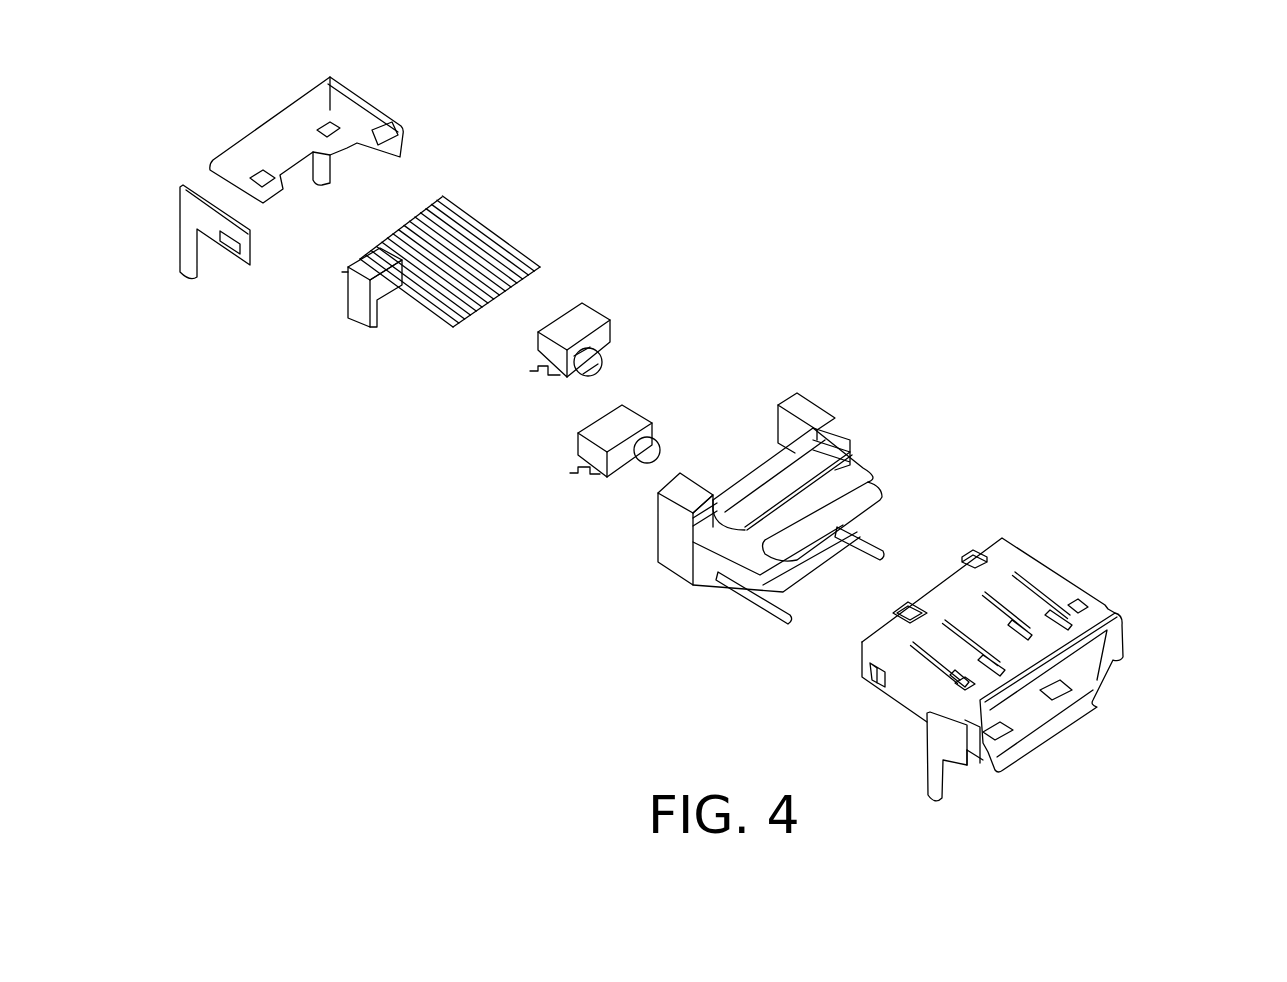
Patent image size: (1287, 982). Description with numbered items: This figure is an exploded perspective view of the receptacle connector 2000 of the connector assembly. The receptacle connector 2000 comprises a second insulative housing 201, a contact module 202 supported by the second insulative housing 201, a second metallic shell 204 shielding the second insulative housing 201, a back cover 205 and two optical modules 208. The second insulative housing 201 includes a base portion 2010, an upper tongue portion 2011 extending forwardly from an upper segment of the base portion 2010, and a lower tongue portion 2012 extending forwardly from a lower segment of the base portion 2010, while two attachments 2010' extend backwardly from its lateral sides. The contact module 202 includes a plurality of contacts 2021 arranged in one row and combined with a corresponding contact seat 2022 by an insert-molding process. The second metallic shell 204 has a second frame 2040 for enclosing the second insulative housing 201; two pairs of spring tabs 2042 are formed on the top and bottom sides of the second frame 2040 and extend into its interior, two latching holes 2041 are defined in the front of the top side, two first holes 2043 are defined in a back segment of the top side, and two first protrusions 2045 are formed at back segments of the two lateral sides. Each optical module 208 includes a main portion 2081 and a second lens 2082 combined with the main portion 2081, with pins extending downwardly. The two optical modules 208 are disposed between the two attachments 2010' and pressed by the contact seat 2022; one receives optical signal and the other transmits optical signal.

The receptacle connector 2000 is at (1255, 577).
The back cover 205 is at (383, 96).
The contact module 202 is at (497, 212).
The contacts 2021 is at (520, 246).
The contact seat 2022 is at (358, 297).
The optical modules 208 is at (513, 350).
The main portion 2081 is at (587, 313).
The second lens 2082 is at (600, 368).
The second insulative housing 201 is at (850, 405).
The base portion 2010 is at (791, 466).
The attachments 2010' is at (845, 401).
The upper tongue portion 2011 is at (880, 497).
The lower tongue portion 2012 is at (750, 578).
The second metallic shell 204 is at (1080, 555).
The second frame 2040 is at (1038, 575).
The latching holes 2041 is at (1093, 592).
The spring tabs 2042 is at (922, 718).
The first holes 2043 is at (968, 556).
The first protrusions 2045 is at (868, 672).